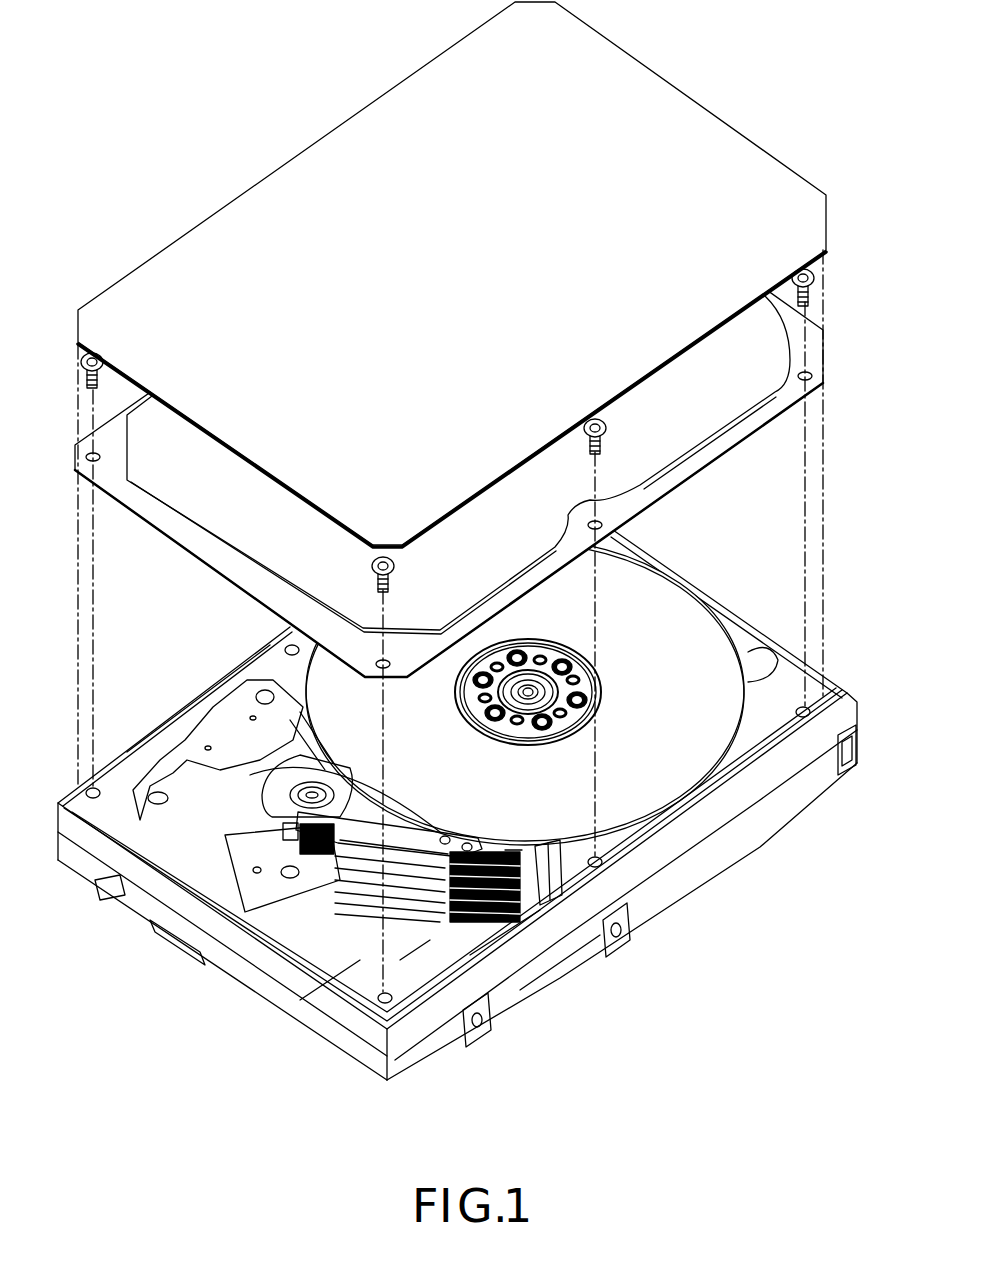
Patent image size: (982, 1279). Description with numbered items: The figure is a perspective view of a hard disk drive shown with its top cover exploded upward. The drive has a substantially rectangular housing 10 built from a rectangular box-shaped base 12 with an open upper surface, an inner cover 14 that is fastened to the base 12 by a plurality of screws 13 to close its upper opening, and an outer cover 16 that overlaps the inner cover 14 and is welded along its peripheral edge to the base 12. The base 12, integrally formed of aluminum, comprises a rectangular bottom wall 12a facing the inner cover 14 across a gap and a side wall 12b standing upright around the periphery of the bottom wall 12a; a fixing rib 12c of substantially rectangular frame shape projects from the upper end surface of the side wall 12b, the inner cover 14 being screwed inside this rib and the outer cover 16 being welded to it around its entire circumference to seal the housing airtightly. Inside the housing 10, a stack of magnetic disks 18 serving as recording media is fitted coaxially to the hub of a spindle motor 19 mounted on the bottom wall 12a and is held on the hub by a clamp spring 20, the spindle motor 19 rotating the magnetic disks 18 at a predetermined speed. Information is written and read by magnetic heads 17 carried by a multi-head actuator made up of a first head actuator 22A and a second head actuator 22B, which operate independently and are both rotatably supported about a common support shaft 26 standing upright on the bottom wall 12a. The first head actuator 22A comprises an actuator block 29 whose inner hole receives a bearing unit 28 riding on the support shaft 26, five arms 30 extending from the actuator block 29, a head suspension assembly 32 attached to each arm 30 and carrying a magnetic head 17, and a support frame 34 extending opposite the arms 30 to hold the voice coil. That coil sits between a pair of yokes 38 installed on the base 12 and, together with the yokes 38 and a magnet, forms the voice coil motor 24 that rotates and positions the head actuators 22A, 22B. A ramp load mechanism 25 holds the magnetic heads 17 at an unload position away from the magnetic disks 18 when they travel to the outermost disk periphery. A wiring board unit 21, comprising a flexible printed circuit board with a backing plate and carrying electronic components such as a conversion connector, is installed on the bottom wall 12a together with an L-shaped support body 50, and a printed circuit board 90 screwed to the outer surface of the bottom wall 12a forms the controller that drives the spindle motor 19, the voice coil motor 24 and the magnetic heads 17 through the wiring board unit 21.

The housing 10 is at (270, 83).
The base 12 is at (458, 819).
The bottom wall 12a is at (465, 933).
The side wall 12b is at (560, 925).
The fixing rib 12c is at (657, 557).
The screws 13 is at (82, 348).
The inner cover 14 is at (745, 390).
The outer cover 16 is at (634, 80).
The magnetic heads 17 is at (506, 880).
The magnetic disks 18 is at (690, 770).
The spindle motor 19 is at (532, 686).
The clamp spring 20 is at (600, 690).
The wiring board unit 21 is at (412, 955).
The first head actuator 22A is at (363, 914).
The second head actuator 22B is at (470, 935).
The voice coil motor 24 is at (178, 864).
The ramp load mechanism 25 is at (547, 838).
The support shaft 26 is at (320, 776).
The bearing unit 28 is at (292, 795).
The actuator block 29 is at (268, 832).
The arms 30 is at (441, 840).
The head suspension assembly 32 is at (488, 855).
The support frame 34 is at (205, 920).
The yokes 38 is at (212, 742).
The support body 50 is at (352, 962).
The printed circuit board 90 is at (322, 1052).